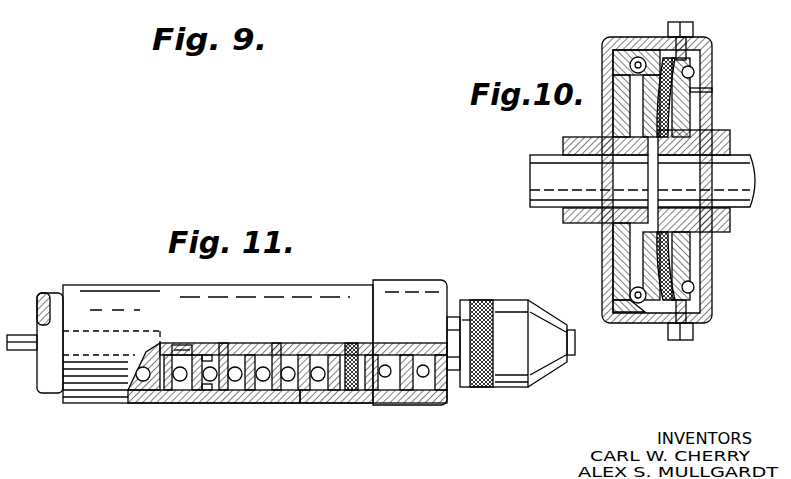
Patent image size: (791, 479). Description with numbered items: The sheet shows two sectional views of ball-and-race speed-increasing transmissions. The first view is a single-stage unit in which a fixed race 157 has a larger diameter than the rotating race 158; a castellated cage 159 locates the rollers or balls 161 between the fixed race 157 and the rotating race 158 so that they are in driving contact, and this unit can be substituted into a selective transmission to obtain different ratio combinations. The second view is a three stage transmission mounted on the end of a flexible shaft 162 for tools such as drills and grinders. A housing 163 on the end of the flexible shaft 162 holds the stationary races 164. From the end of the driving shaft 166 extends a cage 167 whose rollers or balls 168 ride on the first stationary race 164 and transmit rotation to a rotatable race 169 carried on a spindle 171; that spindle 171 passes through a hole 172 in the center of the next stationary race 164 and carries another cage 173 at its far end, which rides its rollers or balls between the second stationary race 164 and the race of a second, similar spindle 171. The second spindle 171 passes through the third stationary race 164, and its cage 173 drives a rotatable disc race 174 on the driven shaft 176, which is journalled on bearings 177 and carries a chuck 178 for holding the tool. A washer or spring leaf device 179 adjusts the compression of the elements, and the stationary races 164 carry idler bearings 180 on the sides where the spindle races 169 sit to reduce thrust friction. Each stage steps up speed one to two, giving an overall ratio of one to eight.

In FIG. 10, the fixed race 157 is at (630, 50).
In FIG. 10, the rotating race 158 is at (655, 102).
In FIG. 10, the cage 159 is at (618, 62).
In FIG. 10, the rollers or balls 161 is at (647, 303).
In FIG. 11, the flexible shaft 162 is at (60, 298).
In FIG. 11, the housing 163 is at (300, 296).
In FIG. 11, the stationary races 164 is at (168, 392).
In FIG. 11, the driving shaft 166 is at (145, 392).
In FIG. 11, the cage 167 is at (182, 352).
In FIG. 11, the rollers or balls 168 is at (188, 395).
In FIG. 11, the rotatable race 169 is at (205, 345).
In FIG. 11, the spindle 171 is at (216, 350).
In FIG. 11, the hole 172 is at (223, 352).
In FIG. 11, the cage 173 is at (243, 395).
In FIG. 11, the rotatable disc race 174 is at (307, 395).
In FIG. 11, the driven shaft 176 is at (335, 345).
In FIG. 11, the bearings 177 is at (405, 392).
In FIG. 11, the chuck 178 is at (503, 310).
In FIG. 11, the washer or spring leaf device 179 is at (352, 392).
In FIG. 11, the idler bearings 180 is at (262, 366).